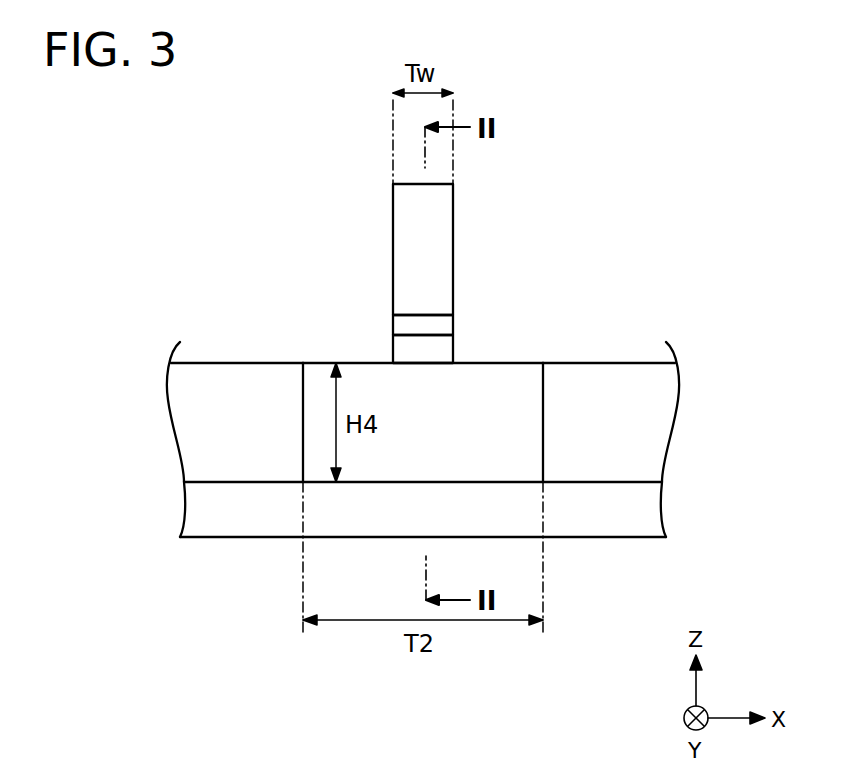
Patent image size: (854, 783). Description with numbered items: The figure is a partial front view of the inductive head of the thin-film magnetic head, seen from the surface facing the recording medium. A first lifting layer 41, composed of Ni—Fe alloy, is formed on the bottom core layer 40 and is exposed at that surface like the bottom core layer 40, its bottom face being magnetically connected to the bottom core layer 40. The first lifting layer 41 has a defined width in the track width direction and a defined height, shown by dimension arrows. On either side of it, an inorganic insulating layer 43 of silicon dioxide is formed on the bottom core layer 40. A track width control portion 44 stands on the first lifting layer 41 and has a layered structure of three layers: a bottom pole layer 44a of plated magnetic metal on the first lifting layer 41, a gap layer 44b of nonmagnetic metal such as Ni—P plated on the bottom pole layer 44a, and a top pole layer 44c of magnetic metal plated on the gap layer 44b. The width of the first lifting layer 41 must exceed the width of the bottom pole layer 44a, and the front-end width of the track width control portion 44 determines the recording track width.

The bottom core layer 40 is at (640, 512).
The first lifting layer 41 is at (492, 392).
The inorganic insulating layer 43 is at (210, 421).
The track width control portion 44 is at (343, 273).
The bottom pole layer 44a is at (403, 348).
The gap layer 44b is at (405, 322).
The top pole layer 44c is at (411, 243).